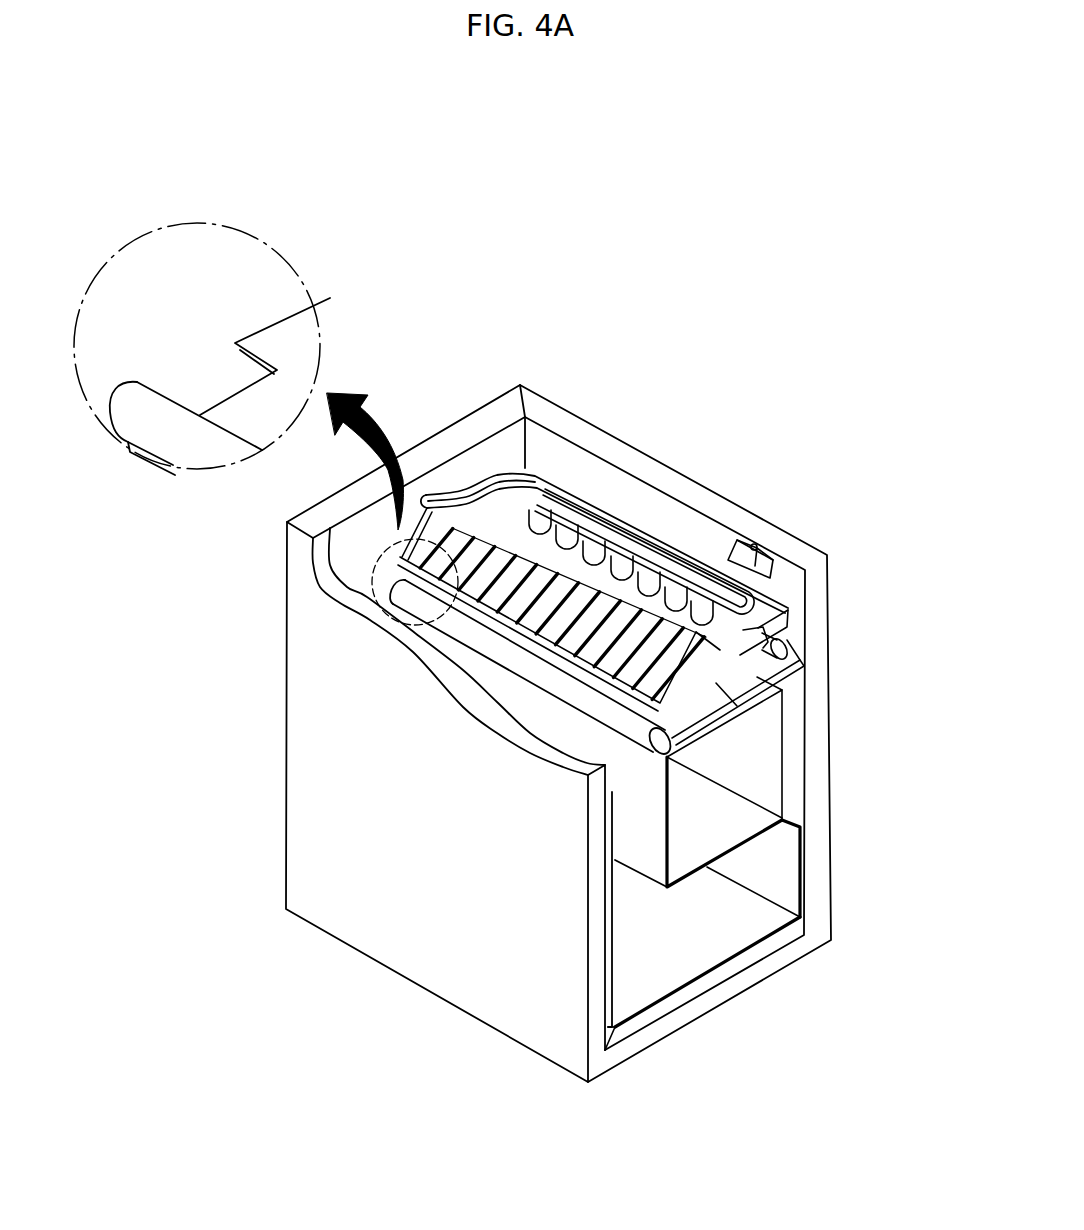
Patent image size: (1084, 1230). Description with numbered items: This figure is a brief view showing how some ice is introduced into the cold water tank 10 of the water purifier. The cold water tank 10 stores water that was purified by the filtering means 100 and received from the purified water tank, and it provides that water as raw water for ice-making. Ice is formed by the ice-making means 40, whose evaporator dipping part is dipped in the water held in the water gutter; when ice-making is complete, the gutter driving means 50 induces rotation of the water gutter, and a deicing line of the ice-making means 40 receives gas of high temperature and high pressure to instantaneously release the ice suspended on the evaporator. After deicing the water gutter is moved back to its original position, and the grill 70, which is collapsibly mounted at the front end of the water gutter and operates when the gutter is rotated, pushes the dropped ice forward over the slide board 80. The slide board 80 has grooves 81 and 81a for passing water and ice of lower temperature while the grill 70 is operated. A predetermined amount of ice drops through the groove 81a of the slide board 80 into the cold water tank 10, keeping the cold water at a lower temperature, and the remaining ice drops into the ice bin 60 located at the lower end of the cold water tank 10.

The filtering means 100 is at (679, 482).
The ice-making means 40 is at (490, 477).
The gutter driving means 50 is at (783, 649).
The grill 70 is at (567, 637).
The slide board 80 is at (707, 727).
The groove 81 is at (716, 683).
The groove 81a is at (215, 372).
The cold water tank 10 is at (750, 838).
The ice bin 60 is at (631, 1017).